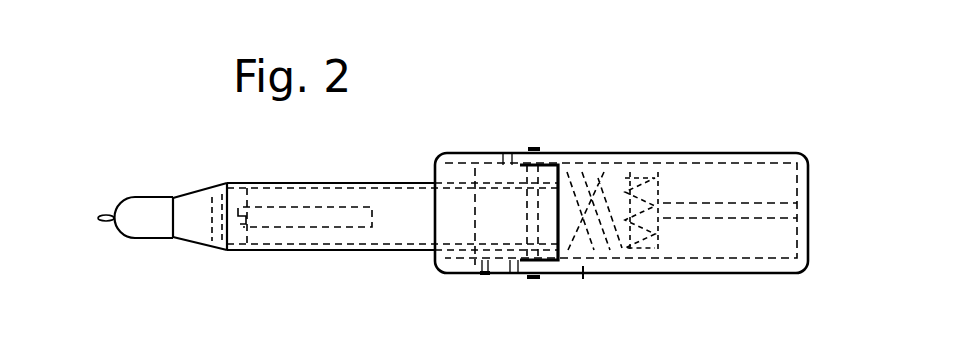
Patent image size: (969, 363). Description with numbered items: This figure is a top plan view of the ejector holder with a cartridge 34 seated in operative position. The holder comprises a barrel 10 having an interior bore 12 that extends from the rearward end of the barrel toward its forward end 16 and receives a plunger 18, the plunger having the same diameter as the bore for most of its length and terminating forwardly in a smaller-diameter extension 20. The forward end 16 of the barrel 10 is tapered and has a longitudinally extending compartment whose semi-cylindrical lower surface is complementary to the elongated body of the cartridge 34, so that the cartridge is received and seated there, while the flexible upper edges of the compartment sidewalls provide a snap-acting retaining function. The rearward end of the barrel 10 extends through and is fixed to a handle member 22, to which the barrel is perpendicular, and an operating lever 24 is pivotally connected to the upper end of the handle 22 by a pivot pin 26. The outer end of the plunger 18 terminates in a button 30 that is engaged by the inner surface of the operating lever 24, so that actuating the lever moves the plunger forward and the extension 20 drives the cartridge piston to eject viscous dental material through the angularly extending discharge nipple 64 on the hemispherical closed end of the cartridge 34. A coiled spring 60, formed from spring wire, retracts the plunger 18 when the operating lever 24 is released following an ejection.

The barrel 10 is at (406, 251).
The interior bore 12 is at (317, 200).
The forward end 16 is at (203, 251).
The plunger 18 is at (584, 274).
The extension 20 is at (330, 246).
The handle member 22 is at (455, 152).
The operating lever 24 is at (760, 152).
The pivot pin 26 is at (530, 152).
The button 30 is at (676, 183).
The cartridge 34 is at (137, 220).
The coiled spring 60 is at (590, 156).
The discharge nipple 64 is at (110, 216).